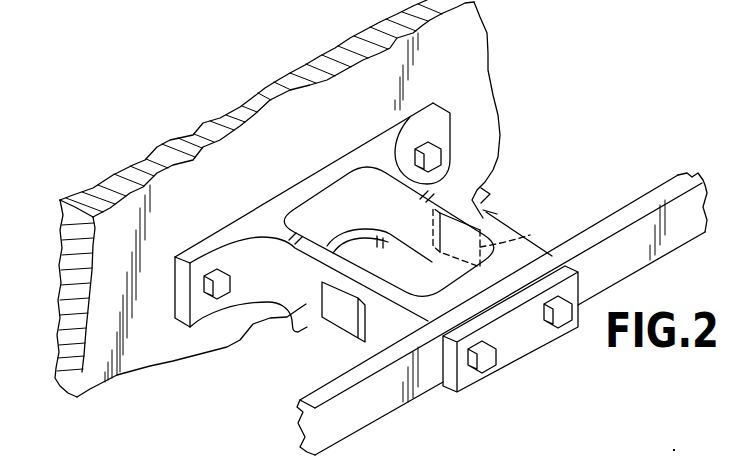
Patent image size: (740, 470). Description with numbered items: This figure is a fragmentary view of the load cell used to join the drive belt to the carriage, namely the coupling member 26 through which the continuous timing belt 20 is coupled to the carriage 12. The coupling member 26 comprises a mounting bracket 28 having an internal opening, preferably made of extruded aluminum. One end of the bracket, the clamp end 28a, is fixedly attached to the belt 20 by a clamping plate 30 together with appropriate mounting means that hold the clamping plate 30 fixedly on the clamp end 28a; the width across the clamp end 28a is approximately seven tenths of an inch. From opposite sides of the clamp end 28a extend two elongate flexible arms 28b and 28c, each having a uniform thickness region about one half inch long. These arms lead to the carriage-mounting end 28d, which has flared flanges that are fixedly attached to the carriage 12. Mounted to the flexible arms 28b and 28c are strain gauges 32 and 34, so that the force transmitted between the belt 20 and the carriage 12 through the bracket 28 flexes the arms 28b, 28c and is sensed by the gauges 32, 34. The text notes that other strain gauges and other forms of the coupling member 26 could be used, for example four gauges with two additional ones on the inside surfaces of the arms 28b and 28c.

The carriage 12 is at (487, 64).
The timing belt 20 is at (682, 176).
The coupling member 26 is at (380, 258).
The mounting bracket 28 is at (380, 247).
The clamp end 28a is at (472, 289).
The elongate flexible arm 28b is at (305, 288).
The elongate flexible arm 28c is at (425, 236).
The carriage-mounting end 28d is at (350, 160).
The clamping plate 30 is at (506, 347).
The strain gauge 32 is at (346, 320).
The strain gauge 34 is at (520, 240).